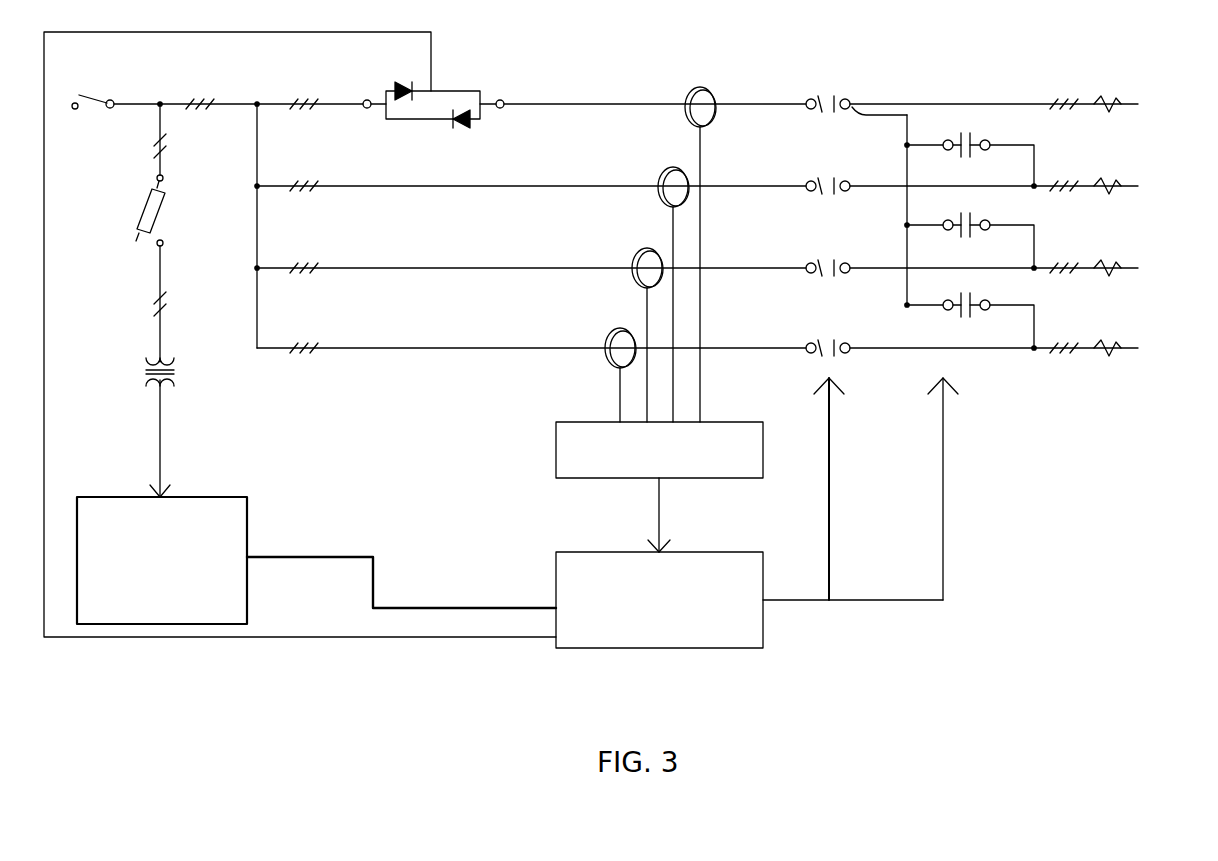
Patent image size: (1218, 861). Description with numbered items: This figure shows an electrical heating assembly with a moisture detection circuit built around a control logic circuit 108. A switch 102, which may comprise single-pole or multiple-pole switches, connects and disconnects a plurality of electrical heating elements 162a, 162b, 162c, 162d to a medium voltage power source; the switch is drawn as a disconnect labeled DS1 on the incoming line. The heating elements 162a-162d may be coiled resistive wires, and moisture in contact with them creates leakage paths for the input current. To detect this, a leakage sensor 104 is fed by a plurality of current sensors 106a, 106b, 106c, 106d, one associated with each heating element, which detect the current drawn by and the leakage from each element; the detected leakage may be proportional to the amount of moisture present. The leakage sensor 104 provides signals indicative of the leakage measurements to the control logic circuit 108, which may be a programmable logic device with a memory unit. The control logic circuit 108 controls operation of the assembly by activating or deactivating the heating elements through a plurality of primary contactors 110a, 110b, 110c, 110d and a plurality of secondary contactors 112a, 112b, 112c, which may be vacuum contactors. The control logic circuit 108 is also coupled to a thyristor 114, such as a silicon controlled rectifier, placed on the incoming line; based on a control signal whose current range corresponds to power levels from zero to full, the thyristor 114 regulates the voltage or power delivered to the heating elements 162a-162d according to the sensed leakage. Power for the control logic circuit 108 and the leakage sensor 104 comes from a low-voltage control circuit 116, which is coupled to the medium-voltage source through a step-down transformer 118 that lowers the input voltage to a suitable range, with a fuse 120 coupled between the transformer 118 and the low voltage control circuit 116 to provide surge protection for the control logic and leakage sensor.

The switch 102 is at (112, 96).
The leakage sensor 104 is at (556, 436).
The current sensor 106a is at (690, 88).
The current sensor 106b is at (662, 170).
The current sensor 106c is at (636, 252).
The current sensor 106d is at (609, 332).
The control logic circuit 108 is at (556, 571).
The primary contactor 110a is at (848, 97).
The primary contactor 110b is at (808, 179).
The primary contactor 110c is at (811, 261).
The primary contactor 110d is at (808, 341).
The secondary contactor 112a is at (986, 140).
The secondary contactor 112b is at (986, 220).
The secondary contactor 112c is at (986, 300).
The thyristor 114 is at (457, 91).
The low-voltage control circuit 116 is at (203, 497).
The step-down transformer 118 is at (144, 352).
The fuse 120 is at (144, 196).
The electrical heating element 162a is at (1112, 98).
The electrical heating element 162b is at (1112, 180).
The electrical heating element 162c is at (1112, 262).
The electrical heating element 162d is at (1112, 342).
The disconnect switch DS1 is at (93, 86).